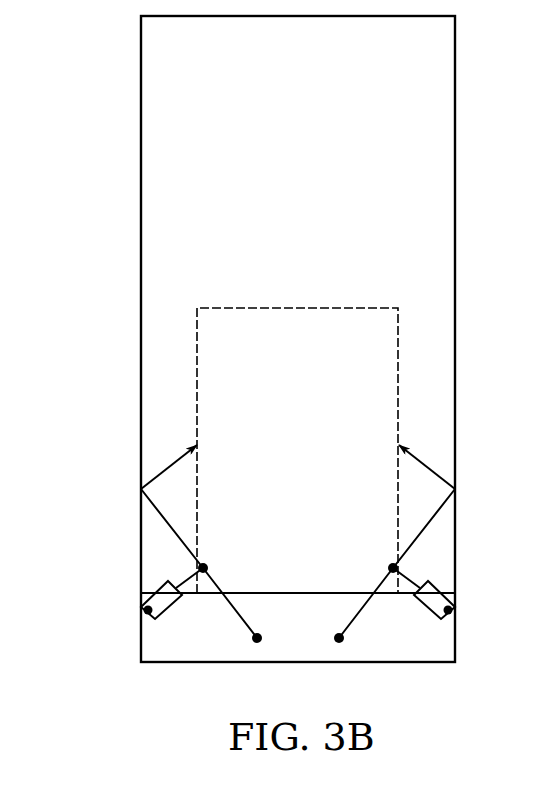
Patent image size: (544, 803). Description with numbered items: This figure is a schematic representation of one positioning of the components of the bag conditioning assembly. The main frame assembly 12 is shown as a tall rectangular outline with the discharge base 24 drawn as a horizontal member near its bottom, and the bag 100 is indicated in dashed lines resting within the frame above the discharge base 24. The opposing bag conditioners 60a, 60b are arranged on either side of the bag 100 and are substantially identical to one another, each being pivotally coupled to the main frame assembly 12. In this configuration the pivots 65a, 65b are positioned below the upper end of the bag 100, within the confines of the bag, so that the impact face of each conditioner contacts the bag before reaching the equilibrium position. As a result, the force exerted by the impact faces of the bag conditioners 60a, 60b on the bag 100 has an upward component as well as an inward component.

The main frame assembly 12 is at (138, 140).
The discharge base 24 is at (298, 588).
The bag 100 is at (297, 307).
The opposing bag conditioner 60a is at (154, 558).
The opposing bag conditioner 60b is at (438, 548).
The pivot 65a is at (248, 645).
The pivot 65b is at (348, 645).